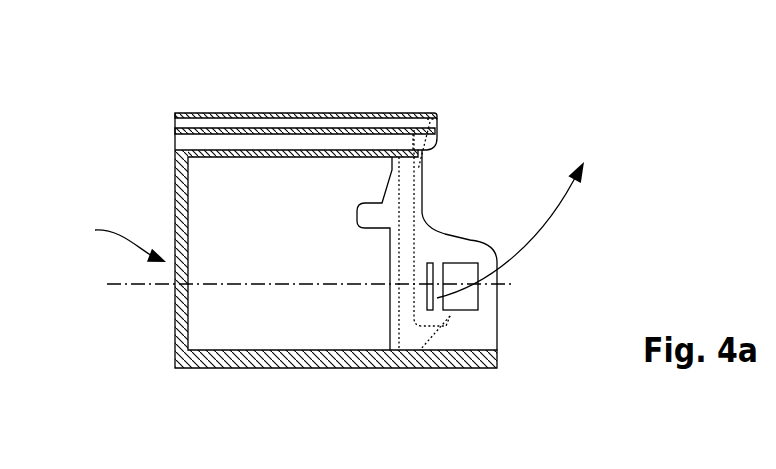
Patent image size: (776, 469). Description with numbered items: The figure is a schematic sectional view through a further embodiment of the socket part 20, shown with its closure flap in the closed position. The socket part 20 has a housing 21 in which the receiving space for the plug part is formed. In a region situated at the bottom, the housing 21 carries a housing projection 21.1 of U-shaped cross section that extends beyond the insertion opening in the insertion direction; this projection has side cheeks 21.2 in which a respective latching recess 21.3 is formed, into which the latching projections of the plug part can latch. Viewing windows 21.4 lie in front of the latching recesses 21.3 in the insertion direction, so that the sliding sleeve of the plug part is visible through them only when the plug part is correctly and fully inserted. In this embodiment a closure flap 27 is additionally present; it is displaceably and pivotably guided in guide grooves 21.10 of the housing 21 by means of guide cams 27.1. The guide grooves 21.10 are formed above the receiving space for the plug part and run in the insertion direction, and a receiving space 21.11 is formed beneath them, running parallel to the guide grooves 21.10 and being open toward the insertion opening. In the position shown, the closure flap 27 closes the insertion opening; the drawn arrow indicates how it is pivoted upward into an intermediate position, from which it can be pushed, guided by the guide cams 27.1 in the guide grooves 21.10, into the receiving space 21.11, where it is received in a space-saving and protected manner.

The socket part 20 is at (114, 241).
The housing 21 is at (175, 317).
The housing projection 21.1 is at (447, 338).
The side cheeks 21.2 is at (492, 292).
The latching recess 21.3 is at (470, 300).
The viewing windows 21.4 is at (417, 294).
The guide grooves 21.10 is at (278, 118).
The receiving space 21.11 is at (273, 140).
The closure flap 27 is at (420, 218).
The guide cams 27.1 is at (437, 122).